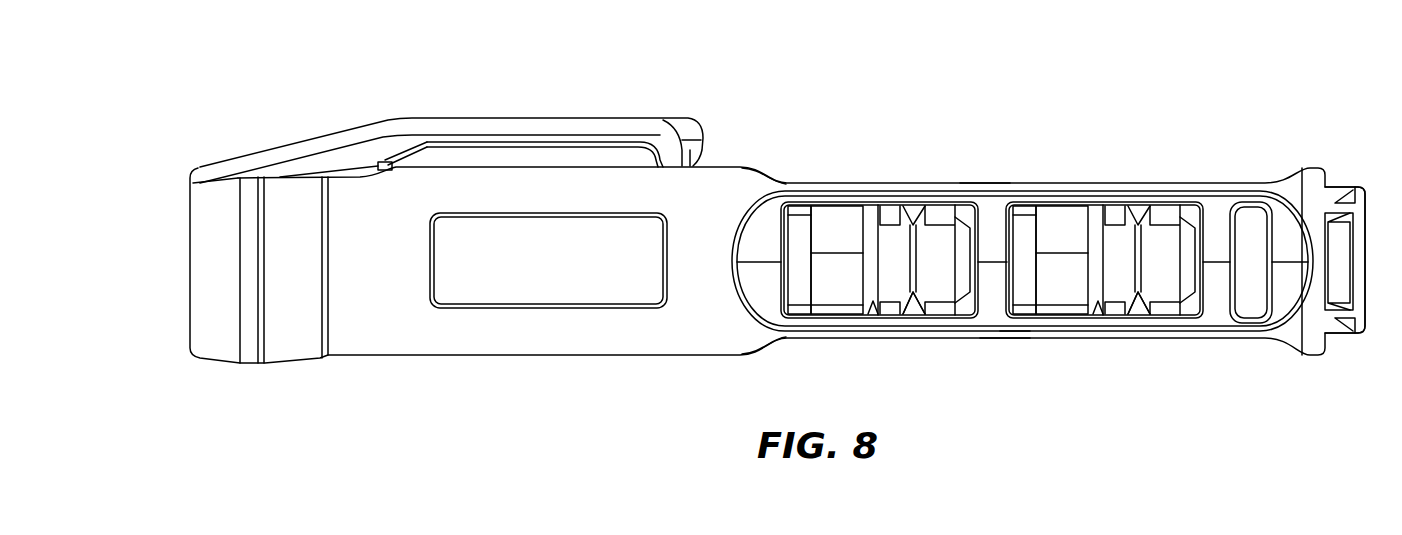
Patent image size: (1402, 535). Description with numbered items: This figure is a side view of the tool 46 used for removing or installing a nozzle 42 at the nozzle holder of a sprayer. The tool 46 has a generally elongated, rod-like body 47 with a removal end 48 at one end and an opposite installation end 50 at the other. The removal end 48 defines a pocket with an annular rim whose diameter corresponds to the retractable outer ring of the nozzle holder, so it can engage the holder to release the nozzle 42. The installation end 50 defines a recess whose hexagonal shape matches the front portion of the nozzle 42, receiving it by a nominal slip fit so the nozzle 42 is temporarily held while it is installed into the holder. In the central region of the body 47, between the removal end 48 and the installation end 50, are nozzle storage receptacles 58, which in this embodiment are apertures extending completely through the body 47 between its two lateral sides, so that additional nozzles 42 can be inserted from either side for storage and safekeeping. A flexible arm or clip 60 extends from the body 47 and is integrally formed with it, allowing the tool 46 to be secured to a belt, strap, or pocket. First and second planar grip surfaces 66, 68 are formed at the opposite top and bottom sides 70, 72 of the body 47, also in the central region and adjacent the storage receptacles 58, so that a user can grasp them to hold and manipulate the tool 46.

The nozzle 42 is at (842, 290).
The tool 46 is at (858, 104).
The body 47 is at (773, 178).
The removal end 48 is at (252, 140).
The installation end 50 is at (1202, 160).
The nozzle storage receptacles 58 is at (917, 343).
The clip 60 is at (525, 130).
The first planer grip surface 66 is at (1005, 178).
The second planer grip surface 68 is at (1003, 343).
The top side 70 is at (940, 141).
The bottom side 72 is at (1002, 397).